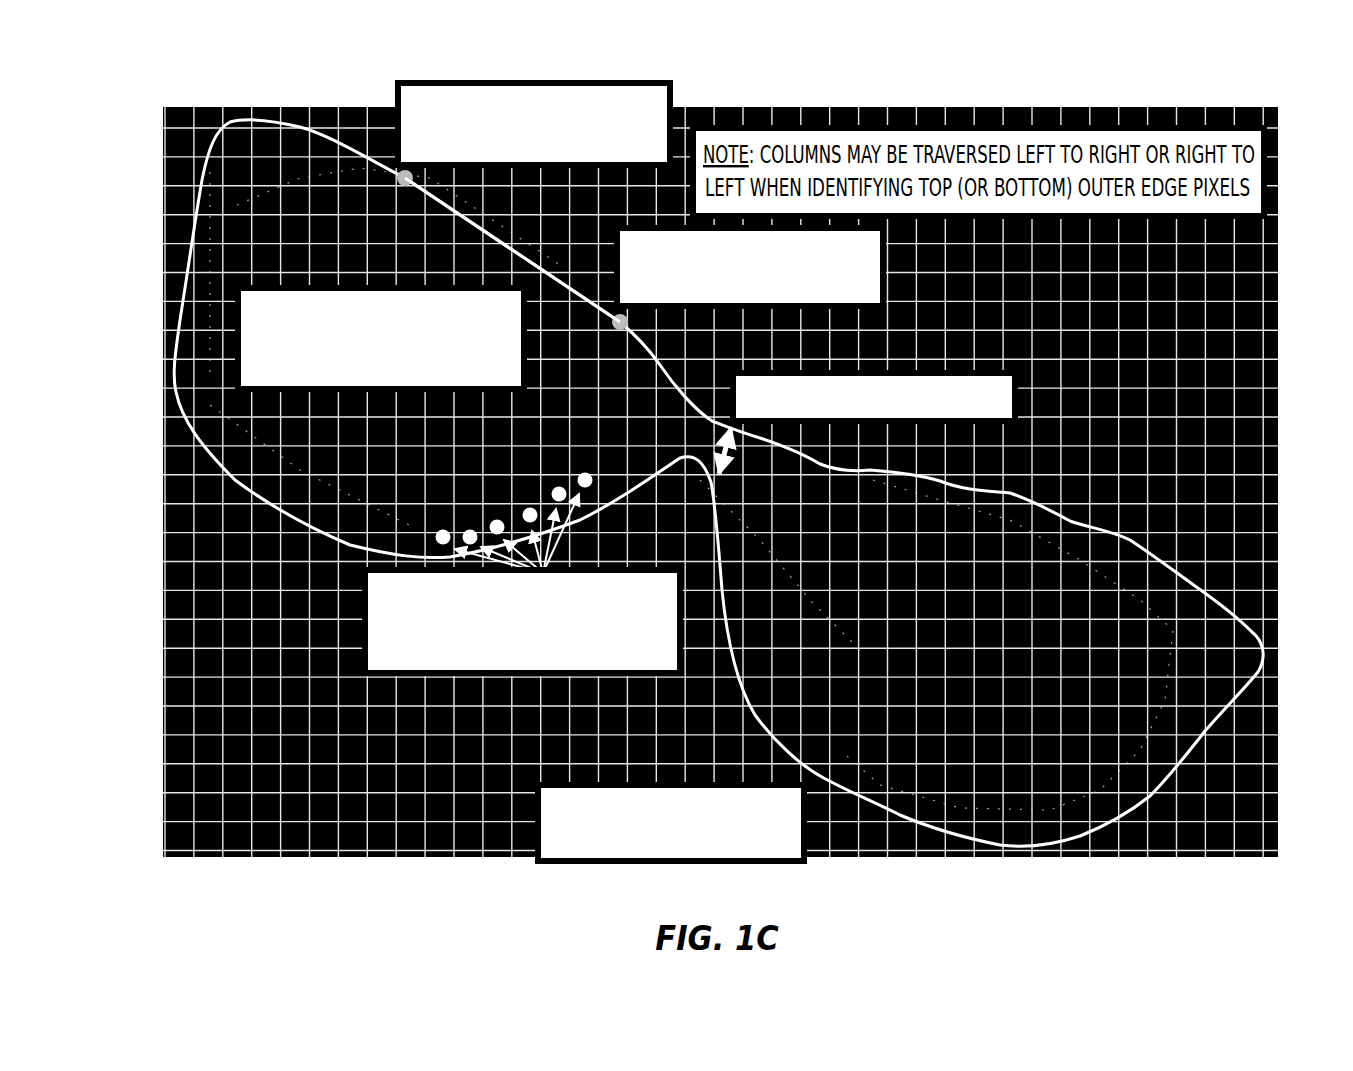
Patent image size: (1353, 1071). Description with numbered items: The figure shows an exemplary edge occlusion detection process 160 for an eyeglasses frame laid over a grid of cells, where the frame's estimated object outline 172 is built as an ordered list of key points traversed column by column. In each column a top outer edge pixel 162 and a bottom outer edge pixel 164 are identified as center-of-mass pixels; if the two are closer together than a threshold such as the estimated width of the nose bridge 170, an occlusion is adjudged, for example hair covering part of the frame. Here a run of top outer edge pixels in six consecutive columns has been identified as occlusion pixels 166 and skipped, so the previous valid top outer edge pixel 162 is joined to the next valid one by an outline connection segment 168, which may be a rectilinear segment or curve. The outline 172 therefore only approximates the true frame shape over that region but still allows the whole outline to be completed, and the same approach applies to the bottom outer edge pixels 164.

The edge occlusion detection process 160 is at (1292, 115).
The top outer edge pixel 162 is at (418, 180).
The bottom outer edge pixel 164 is at (822, 778).
The occlusion pixels 166 is at (522, 574).
The outline connection segment 168 is at (470, 234).
The width of the nose bridge 170 is at (995, 409).
The object outline 172 is at (1258, 619).